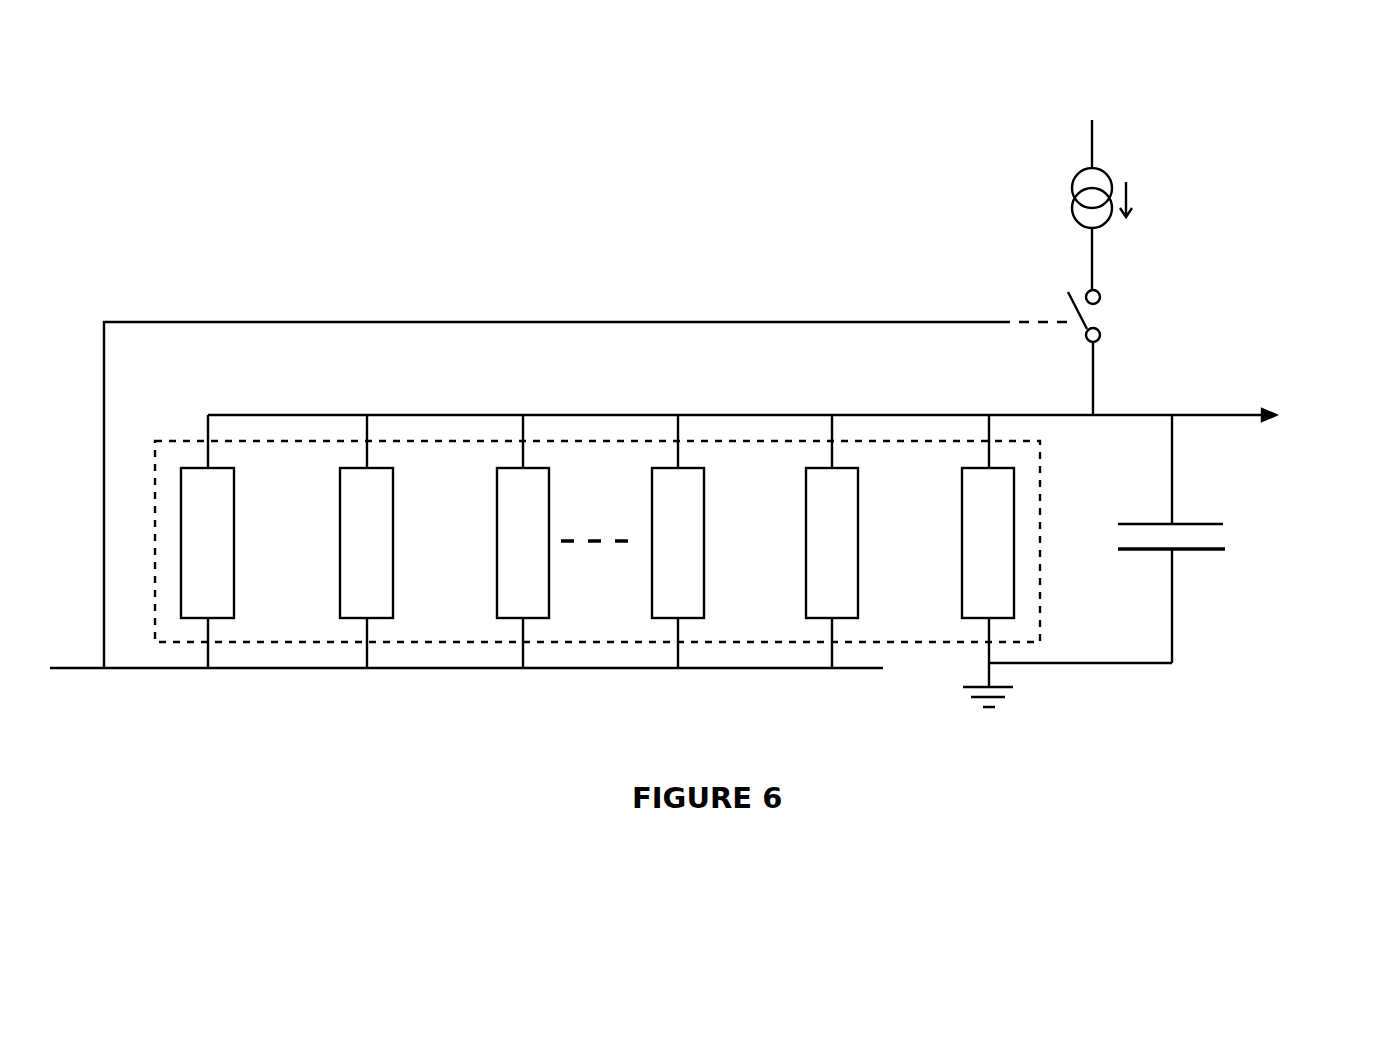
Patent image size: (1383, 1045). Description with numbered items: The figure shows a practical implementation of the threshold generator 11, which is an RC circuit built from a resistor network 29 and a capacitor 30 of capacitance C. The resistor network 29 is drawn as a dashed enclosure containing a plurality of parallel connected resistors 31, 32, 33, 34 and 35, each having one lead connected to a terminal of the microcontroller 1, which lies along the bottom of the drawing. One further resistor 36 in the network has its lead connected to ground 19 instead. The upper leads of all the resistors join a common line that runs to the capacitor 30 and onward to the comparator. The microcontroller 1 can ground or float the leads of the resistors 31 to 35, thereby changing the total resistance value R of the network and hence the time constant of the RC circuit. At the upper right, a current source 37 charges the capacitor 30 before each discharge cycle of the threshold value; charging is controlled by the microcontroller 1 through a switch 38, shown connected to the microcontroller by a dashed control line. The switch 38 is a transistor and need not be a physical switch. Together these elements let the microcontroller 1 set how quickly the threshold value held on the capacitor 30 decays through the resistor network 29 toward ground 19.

The microcontroller 1 is at (286, 672).
The threshold generator 11 is at (323, 264).
The ground 19 is at (1012, 698).
The resistor network 29 is at (742, 441).
The capacitor 30 is at (1193, 540).
The resistor 31 is at (222, 499).
The resistor 32 is at (381, 490).
The resistor 33 is at (537, 495).
The resistor 34 is at (688, 493).
The resistor 35 is at (845, 492).
The resistor 36 is at (1002, 489).
The current source 37 is at (1143, 203).
The switch 38 is at (1100, 316).